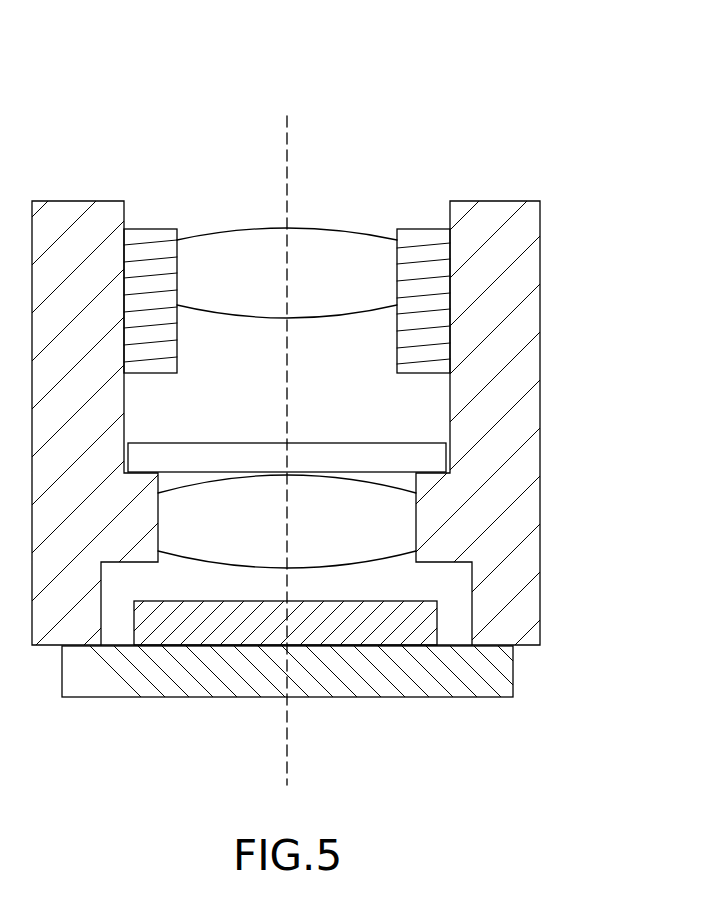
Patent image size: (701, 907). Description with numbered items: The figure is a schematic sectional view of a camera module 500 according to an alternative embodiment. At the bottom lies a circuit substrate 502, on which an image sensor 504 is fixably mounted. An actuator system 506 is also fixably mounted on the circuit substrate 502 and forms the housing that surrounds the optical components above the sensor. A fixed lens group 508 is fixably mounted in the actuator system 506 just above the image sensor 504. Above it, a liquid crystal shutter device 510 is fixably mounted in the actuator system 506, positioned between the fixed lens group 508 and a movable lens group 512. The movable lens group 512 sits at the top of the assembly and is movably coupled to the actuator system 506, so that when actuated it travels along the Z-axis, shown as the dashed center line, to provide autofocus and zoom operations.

The camera module 500 is at (58, 96).
The circuit substrate 502 is at (462, 675).
The image sensor 504 is at (155, 620).
The actuator system 506 is at (510, 289).
The fixed lens group 508 is at (198, 512).
The liquid crystal shutter device 510 is at (398, 452).
The movable lens group 512 is at (210, 275).